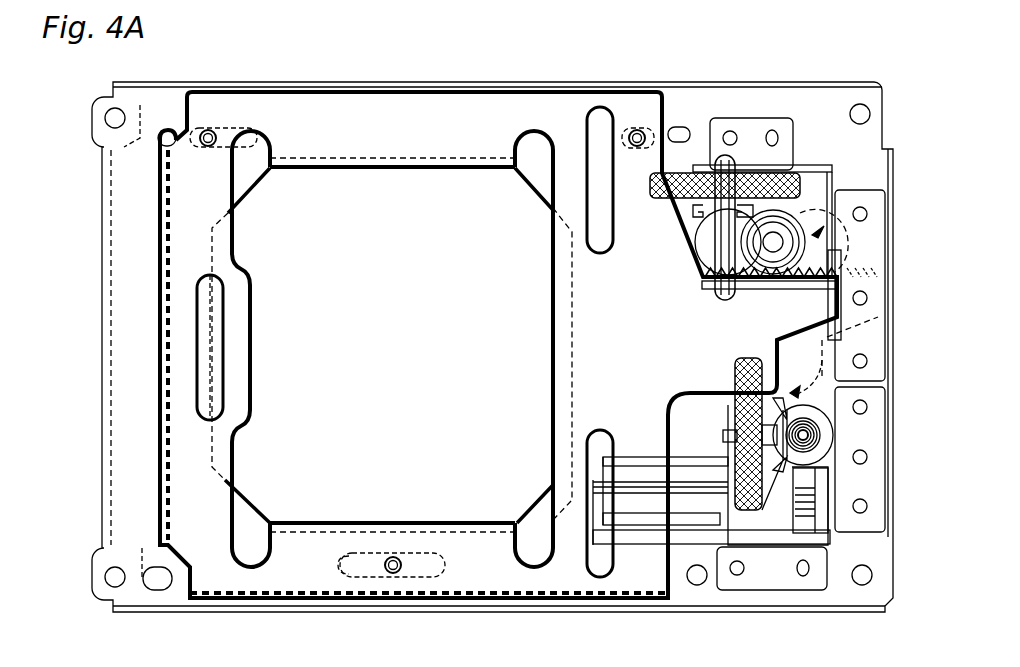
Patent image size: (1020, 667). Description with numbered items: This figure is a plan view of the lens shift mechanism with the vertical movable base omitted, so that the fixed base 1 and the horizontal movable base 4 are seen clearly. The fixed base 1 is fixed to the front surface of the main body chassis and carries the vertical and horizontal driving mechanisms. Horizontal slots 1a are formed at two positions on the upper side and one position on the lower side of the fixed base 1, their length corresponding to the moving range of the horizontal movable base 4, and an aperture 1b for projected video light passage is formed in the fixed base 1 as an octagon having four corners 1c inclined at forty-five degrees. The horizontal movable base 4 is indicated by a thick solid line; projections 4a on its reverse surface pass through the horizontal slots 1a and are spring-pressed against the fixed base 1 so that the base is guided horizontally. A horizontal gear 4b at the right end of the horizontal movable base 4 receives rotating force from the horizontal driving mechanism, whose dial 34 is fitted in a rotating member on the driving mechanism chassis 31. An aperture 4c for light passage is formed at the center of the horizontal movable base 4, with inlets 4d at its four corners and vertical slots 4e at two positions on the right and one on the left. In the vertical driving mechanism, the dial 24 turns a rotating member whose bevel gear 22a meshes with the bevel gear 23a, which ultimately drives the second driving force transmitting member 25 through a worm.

The fixed base 1 is at (823, 100).
The horizontal slot 1a is at (163, 130).
The aperture 1b is at (352, 160).
The corner 1c is at (258, 187).
The horizontal movable base 4 is at (185, 120).
The projection 4a is at (212, 127).
The horizontal gear 4b is at (703, 283).
The aperture 4c is at (388, 172).
The inlet 4d is at (268, 150).
The vertical slot 4e is at (592, 105).
The bevel gear 22a is at (777, 490).
The bevel gear 23a is at (815, 462).
The dial 24 is at (742, 513).
The second driving force transmitting member 25 is at (694, 587).
The driving mechanism chassis 31 is at (817, 167).
The dial 34 is at (680, 173).